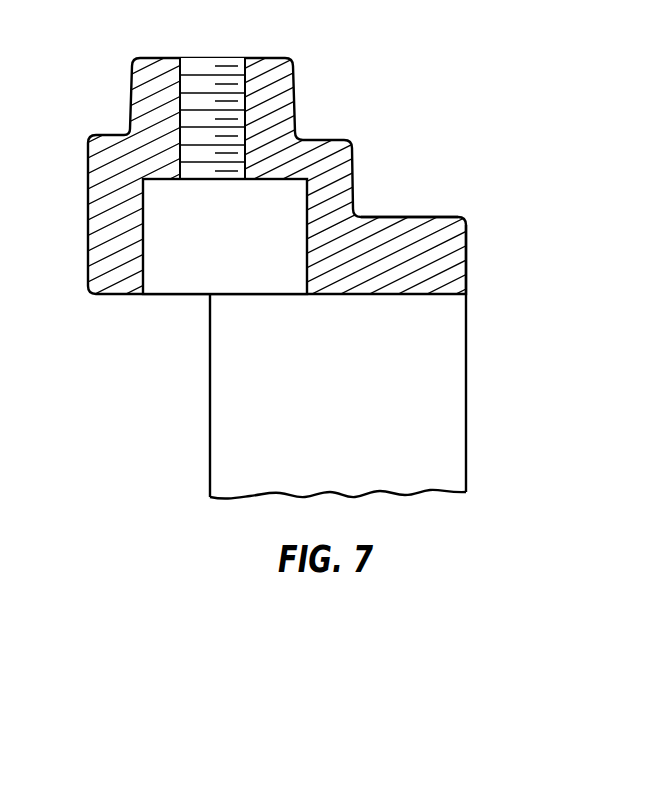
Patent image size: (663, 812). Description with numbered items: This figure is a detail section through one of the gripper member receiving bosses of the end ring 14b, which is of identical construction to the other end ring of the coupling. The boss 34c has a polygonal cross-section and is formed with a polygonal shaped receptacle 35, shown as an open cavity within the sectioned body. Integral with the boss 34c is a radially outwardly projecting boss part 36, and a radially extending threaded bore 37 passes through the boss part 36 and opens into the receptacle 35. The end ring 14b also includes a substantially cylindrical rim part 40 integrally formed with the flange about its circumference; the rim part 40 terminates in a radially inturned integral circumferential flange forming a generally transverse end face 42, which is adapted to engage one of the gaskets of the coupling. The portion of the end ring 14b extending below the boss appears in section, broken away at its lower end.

The gripper member receiving boss 34c is at (295, 102).
The boss part 36 is at (130, 101).
The threaded bore 37 is at (183, 82).
The receptacle 35 is at (147, 260).
The cylindrical rim part 40 is at (408, 218).
The end face 42 is at (468, 256).
The end ring 14b is at (209, 415).